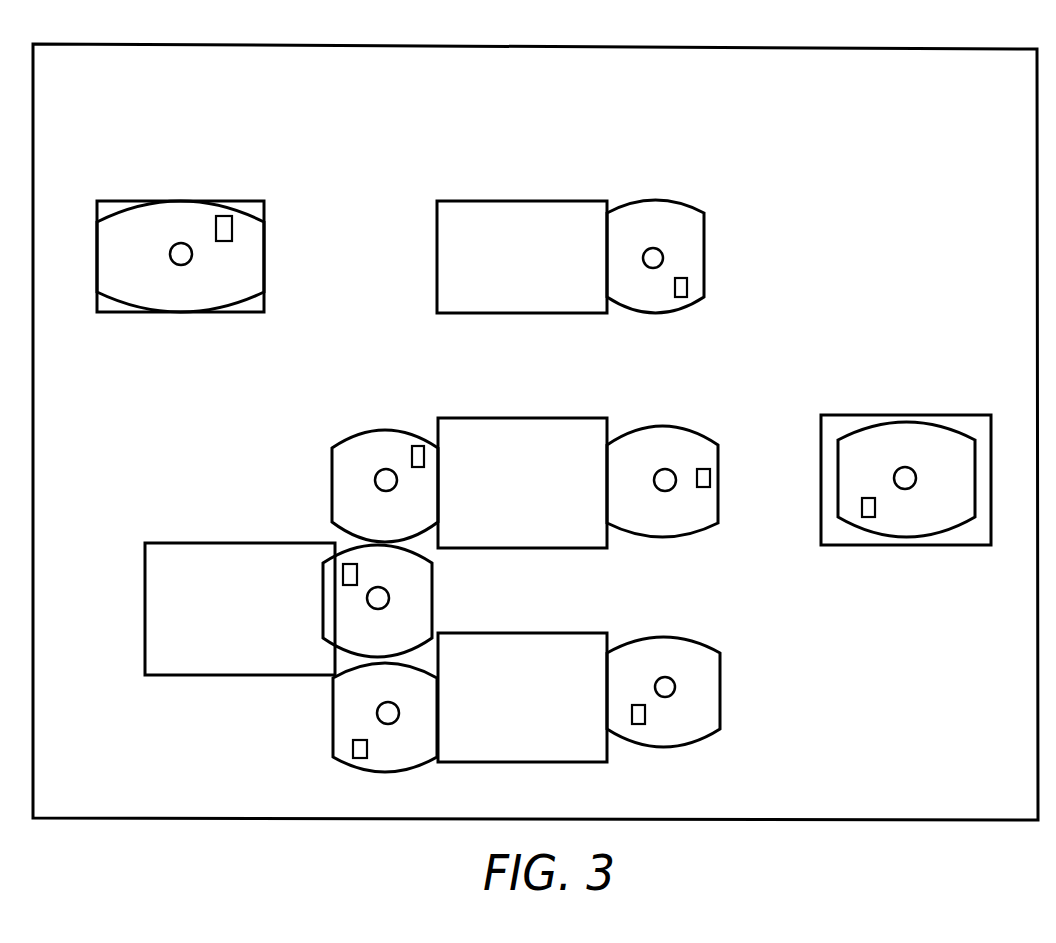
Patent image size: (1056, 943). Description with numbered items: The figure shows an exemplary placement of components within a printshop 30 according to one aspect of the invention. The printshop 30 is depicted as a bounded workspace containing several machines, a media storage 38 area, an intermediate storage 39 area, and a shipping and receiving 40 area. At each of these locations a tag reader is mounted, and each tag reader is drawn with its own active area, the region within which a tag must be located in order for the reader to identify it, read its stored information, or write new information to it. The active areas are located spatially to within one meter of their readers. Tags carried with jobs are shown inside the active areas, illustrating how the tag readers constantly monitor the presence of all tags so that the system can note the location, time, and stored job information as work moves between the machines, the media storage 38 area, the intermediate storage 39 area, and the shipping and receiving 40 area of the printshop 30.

The printshop 30 is at (341, 82).
The media storage area 38 is at (105, 200).
The intermediate storage area 39 is at (216, 543).
The shipping and receiving area 40 is at (977, 427).